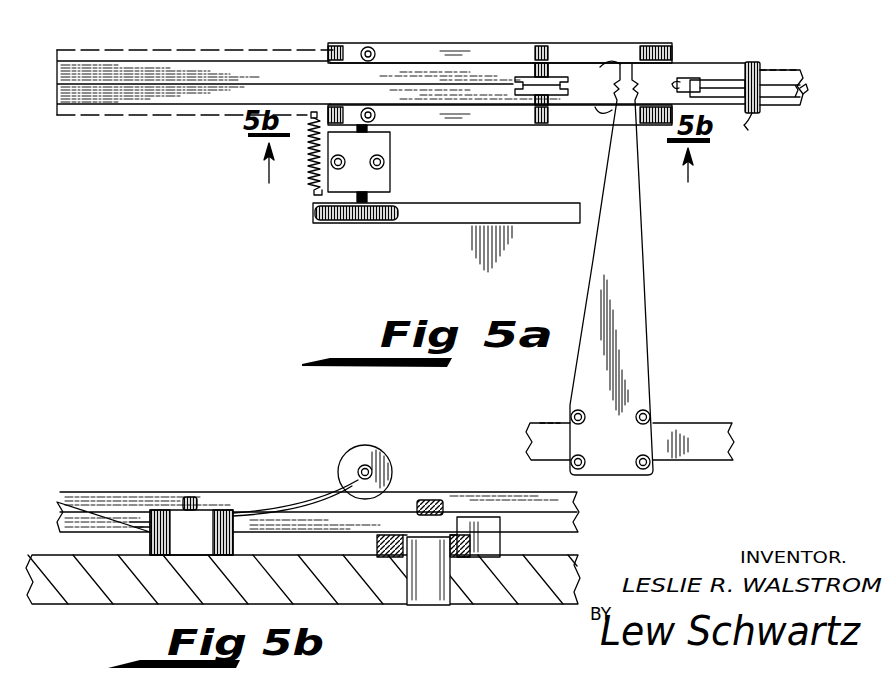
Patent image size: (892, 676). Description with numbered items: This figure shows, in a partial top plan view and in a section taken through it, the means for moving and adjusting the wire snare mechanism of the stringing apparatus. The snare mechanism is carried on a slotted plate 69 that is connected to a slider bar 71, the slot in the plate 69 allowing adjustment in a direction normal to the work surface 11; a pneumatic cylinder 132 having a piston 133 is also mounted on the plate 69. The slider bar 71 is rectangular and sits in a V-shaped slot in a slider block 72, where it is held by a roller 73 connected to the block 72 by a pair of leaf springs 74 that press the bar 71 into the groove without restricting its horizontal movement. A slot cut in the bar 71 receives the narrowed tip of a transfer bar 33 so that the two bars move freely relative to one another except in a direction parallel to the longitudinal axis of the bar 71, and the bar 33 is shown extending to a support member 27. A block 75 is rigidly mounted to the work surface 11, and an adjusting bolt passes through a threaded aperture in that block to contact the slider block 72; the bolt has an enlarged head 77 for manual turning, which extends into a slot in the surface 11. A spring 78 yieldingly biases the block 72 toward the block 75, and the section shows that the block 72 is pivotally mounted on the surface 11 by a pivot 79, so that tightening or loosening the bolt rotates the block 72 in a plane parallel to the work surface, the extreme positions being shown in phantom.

In FIG. 5B, the work surface 11 is at (560, 561).
In FIG. 5A, the support bar 27 is at (693, 430).
In FIG. 5A, the transfer bar 33 is at (641, 278).
In FIG. 5B, the transfer bar 33 is at (432, 500).
In FIG. 5A, the slotted plate 69 is at (755, 104).
In FIG. 5A, the slider bar 71 is at (152, 105).
In FIG. 5B, the slider bar 71 is at (82, 492).
In FIG. 5B, the slider block 72 is at (150, 544).
In FIG. 5A, the roller 73 is at (562, 80).
In FIG. 5B, the roller 73 is at (378, 456).
In FIG. 5A, the leaf springs 74 is at (418, 55).
In FIG. 5B, the leaf springs 74 is at (300, 505).
In FIG. 5A, the block 75 is at (390, 152).
In FIG. 5A, the enlarged head 77 is at (315, 212).
In FIG. 5A, the spring 78 is at (306, 173).
In FIG. 5A, the pivot 79 is at (607, 111).
In FIG. 5B, the pivot 79 is at (424, 600).
In FIG. 5A, the pneumatic cylinder 132 is at (718, 80).
In FIG. 5A, the piston 133 is at (806, 86).